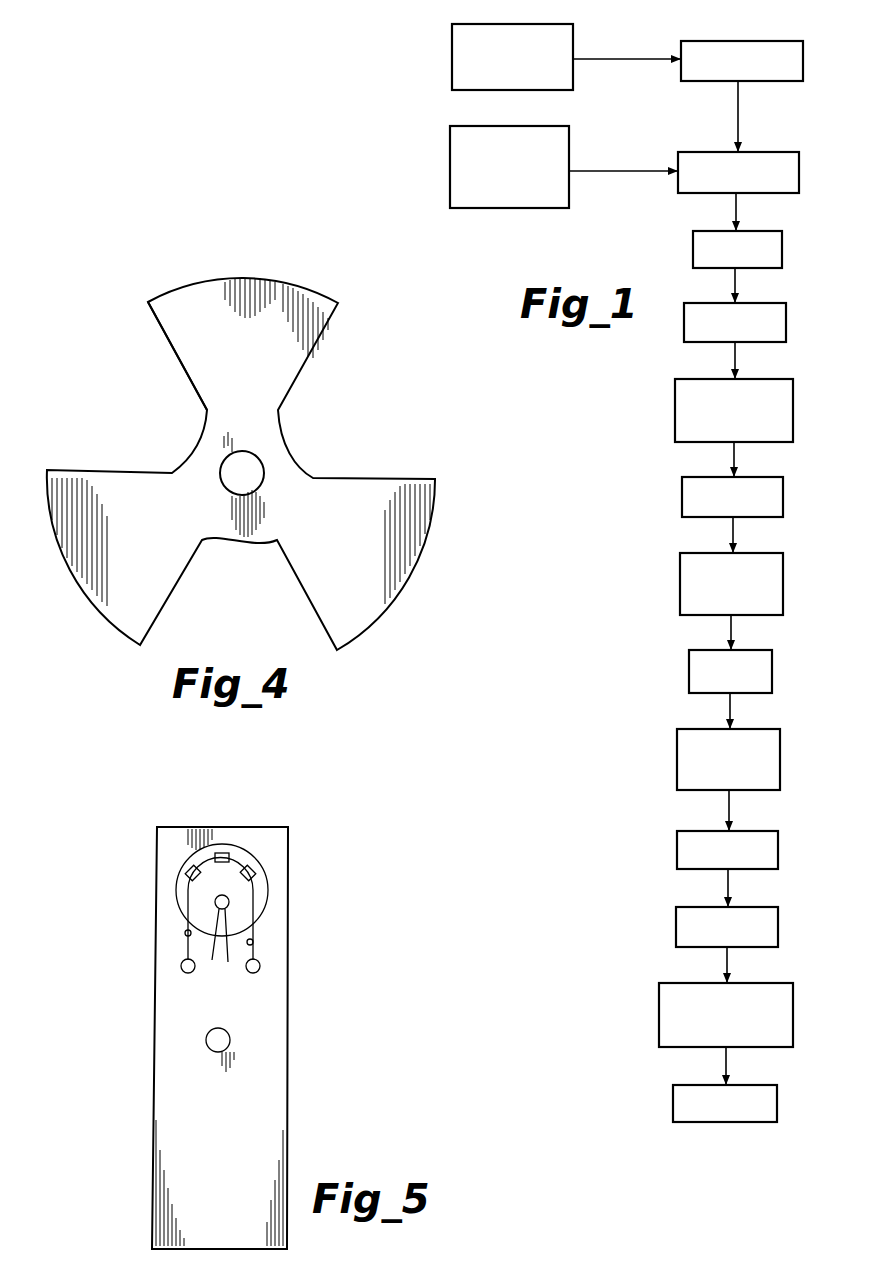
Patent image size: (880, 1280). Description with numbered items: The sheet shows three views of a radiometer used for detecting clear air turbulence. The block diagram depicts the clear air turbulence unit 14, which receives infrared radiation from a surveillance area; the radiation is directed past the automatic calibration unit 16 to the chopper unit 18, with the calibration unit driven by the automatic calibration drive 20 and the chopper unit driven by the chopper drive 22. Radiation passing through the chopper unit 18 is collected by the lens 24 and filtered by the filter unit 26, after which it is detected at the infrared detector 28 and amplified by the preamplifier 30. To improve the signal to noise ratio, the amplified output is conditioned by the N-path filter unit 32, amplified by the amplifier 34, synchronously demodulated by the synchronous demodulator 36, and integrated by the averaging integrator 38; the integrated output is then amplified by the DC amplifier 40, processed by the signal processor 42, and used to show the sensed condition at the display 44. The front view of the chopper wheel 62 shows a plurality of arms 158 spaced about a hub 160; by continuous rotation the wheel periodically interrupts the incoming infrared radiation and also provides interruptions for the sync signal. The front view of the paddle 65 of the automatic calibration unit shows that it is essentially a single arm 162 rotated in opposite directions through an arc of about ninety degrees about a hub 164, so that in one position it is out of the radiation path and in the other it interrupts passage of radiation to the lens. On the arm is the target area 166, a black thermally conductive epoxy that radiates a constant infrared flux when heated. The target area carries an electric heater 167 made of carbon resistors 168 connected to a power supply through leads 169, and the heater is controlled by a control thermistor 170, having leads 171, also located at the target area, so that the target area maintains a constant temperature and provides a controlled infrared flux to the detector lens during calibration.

In FIG. 1, the clear air turbulence unit 14 is at (640, 456).
In FIG. 1, the automatic calibration unit 16 is at (763, 41).
In FIG. 1, the chopper unit 18 is at (786, 152).
In FIG. 1, the automatic calibration drive 20 is at (452, 51).
In FIG. 1, the chopper drive 22 is at (450, 160).
In FIG. 1, the lens 24 is at (782, 250).
In FIG. 1, the filter unit 26 is at (786, 330).
In FIG. 1, the infrared detector 28 is at (793, 408).
In FIG. 1, the preamplifier 30 is at (783, 496).
In FIG. 1, the N-path filter unit 32 is at (783, 573).
In FIG. 1, the amplifier 34 is at (772, 679).
In FIG. 1, the synchronous demodulator 36 is at (780, 760).
In FIG. 1, the averaging integrator 38 is at (778, 856).
In FIG. 1, the DC amplifier 40 is at (778, 920).
In FIG. 1, the signal processor 42 is at (793, 1005).
In FIG. 1, the display 44 is at (777, 1105).
In FIG. 4, the chopper wheel 62 is at (236, 464).
In FIG. 5, the paddle 65 is at (238, 1019).
In FIG. 4, the arms 158 is at (160, 301).
In FIG. 4, the hub 160 is at (292, 458).
In FIG. 5, the arm 162 is at (152, 1147).
In FIG. 5, the hub 164 is at (206, 1040).
In FIG. 5, the target area 166 is at (247, 848).
In FIG. 5, the electric heater 167 is at (199, 857).
In FIG. 5, the carbon resistors 168 is at (187, 877).
In FIG. 5, the leads 169 is at (185, 927).
In FIG. 5, the control thermistor 170 is at (215, 902).
In FIG. 5, the leads 171 is at (217, 945).